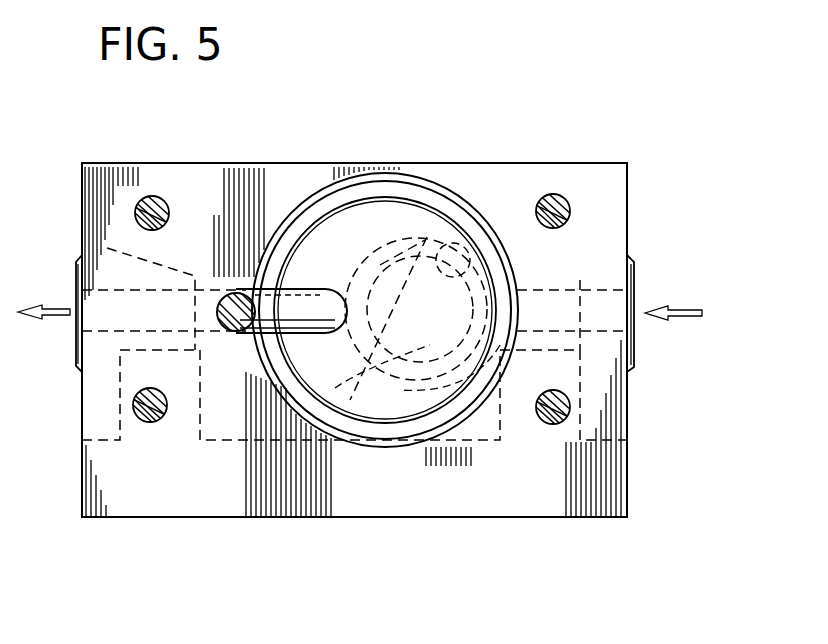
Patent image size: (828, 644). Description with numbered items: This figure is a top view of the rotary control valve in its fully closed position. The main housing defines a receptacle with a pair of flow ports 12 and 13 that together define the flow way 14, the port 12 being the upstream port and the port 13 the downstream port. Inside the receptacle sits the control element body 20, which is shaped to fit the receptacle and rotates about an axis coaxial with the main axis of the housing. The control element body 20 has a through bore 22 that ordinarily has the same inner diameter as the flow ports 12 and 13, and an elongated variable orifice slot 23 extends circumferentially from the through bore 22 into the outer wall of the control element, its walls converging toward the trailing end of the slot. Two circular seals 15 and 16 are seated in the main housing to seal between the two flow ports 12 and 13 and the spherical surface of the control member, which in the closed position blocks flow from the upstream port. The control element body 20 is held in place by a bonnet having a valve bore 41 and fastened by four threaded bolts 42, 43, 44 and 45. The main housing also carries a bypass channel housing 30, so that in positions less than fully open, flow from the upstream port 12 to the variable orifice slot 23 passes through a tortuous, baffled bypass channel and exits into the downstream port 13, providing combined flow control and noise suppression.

The flow port 12 is at (77, 300).
The flow port 13 is at (635, 302).
The flow way 14 is at (54, 325).
The circular seal 15 is at (106, 247).
The circular seal 16 is at (587, 267).
The control element body 20 is at (323, 247).
The through bore 22 is at (378, 240).
The elongated variable orifice slot 23 is at (420, 242).
The bypass channel housing 30 is at (627, 503).
The valve bore 41 is at (238, 292).
The threaded bolt 42 is at (150, 424).
The threaded bolt 43 is at (152, 196).
The threaded bolt 44 is at (570, 411).
The threaded bolt 45 is at (570, 208).